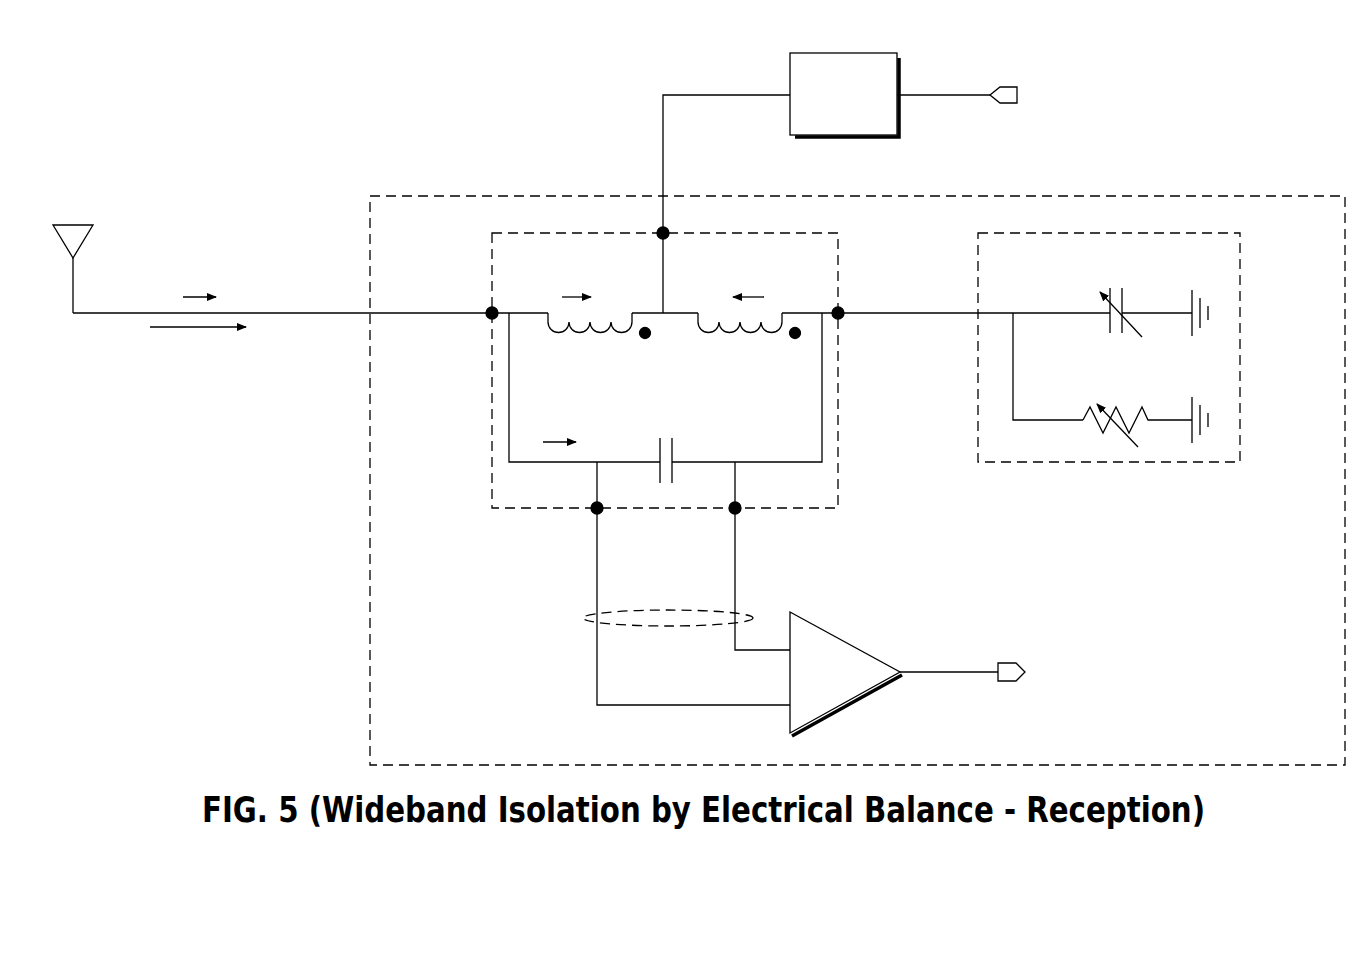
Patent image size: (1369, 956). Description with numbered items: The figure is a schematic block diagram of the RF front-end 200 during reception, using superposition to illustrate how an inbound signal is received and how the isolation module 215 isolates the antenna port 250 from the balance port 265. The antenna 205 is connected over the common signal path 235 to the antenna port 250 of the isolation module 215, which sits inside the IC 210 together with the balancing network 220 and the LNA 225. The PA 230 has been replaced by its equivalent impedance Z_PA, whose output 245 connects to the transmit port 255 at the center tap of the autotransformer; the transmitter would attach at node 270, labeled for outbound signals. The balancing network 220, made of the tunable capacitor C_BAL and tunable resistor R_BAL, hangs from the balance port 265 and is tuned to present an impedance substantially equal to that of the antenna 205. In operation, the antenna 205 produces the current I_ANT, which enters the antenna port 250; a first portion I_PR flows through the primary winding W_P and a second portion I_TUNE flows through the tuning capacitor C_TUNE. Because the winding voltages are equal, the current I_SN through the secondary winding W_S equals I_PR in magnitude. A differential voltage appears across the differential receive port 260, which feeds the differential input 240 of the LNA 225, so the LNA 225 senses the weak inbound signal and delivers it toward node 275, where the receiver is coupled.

The RF front-end 200 is at (238, 665).
The antenna 205 is at (87, 242).
The IC 210 is at (369, 503).
The isolation module 215 is at (541, 233).
The balancing network 220 is at (1162, 462).
The LNA 225 is at (840, 637).
The PA 230 is at (846, 53).
The common signal path 235 is at (318, 313).
The differential input 240 is at (585, 620).
The output 245 is at (707, 95).
The antenna port 250 is at (492, 313).
The transmit port 255 is at (663, 233).
The differential receive port 260 is at (735, 515).
The balance port 265 is at (838, 313).
The node 270 is at (1012, 87).
The node 275 is at (1013, 663).